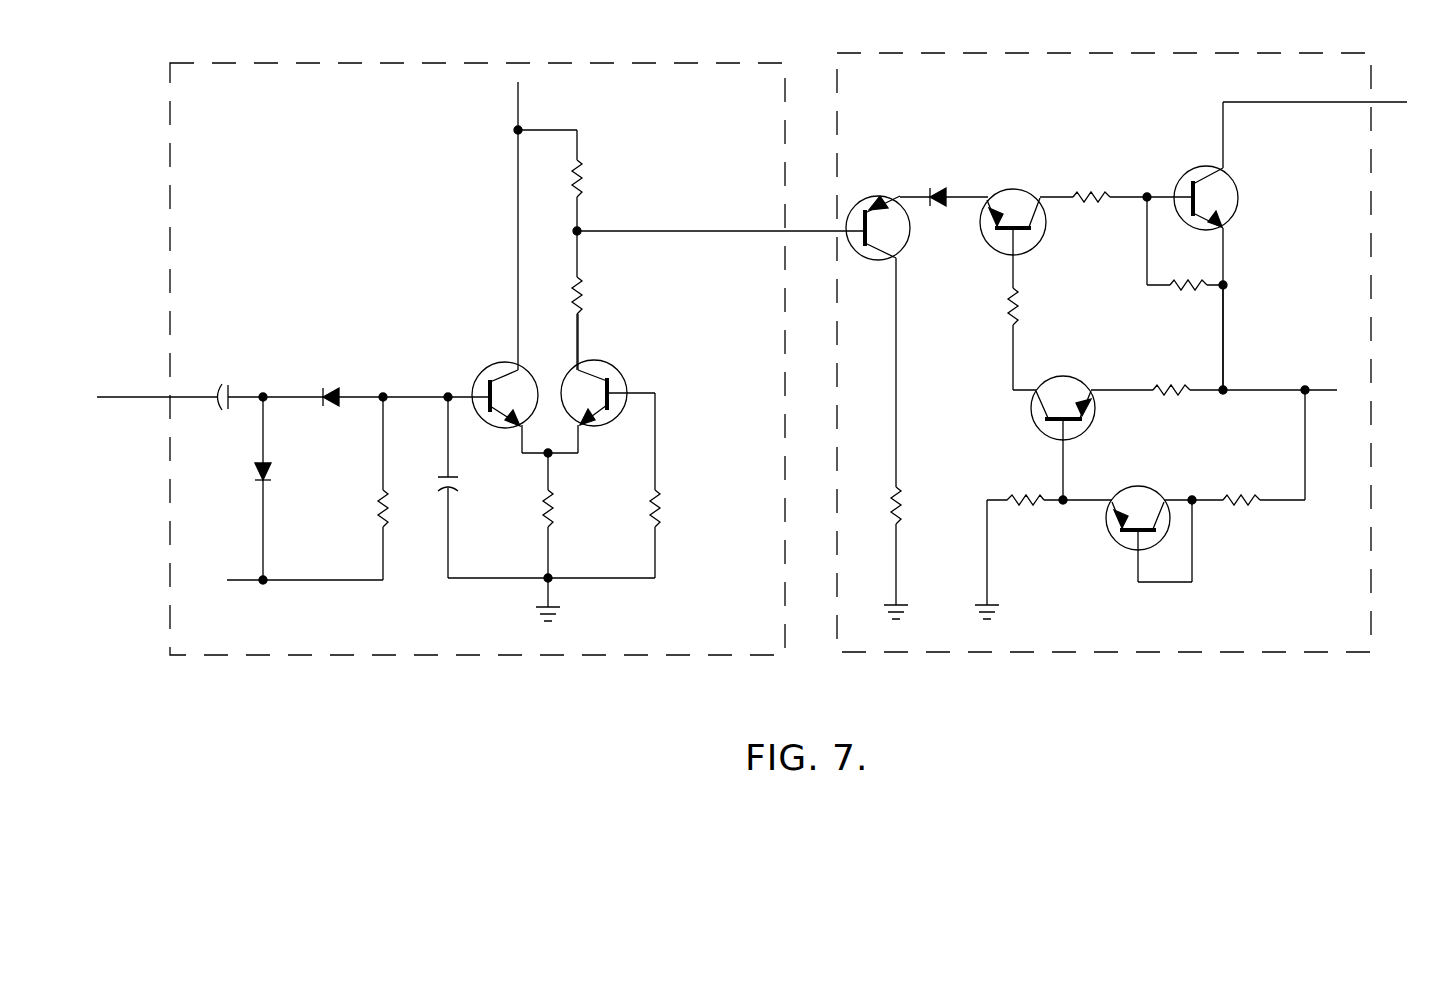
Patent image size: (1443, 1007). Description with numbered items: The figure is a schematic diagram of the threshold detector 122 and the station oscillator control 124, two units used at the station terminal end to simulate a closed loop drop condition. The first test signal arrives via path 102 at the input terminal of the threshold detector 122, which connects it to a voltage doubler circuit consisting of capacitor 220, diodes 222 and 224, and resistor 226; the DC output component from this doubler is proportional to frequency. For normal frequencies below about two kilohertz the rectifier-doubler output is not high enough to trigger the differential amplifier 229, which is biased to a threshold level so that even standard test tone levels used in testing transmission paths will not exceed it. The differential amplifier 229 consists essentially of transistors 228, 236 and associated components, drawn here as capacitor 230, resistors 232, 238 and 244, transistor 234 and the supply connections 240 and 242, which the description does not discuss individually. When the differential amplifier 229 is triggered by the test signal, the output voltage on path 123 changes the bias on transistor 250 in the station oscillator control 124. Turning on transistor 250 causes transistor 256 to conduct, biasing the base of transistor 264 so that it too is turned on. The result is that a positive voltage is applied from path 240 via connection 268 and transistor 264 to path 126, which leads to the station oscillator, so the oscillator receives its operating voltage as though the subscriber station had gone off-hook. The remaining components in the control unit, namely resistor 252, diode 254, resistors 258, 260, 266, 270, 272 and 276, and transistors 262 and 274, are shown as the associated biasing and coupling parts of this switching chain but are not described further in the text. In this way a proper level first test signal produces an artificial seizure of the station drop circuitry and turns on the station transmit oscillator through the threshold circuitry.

The path 102 is at (133, 396).
The threshold detector 122 is at (232, 113).
The path 123 is at (792, 231).
The station oscillator control 124 is at (887, 102).
The path 126 is at (1378, 101).
The capacitor 220 is at (226, 392).
The diode 222 is at (331, 392).
The diode 224 is at (268, 473).
The resistor 226 is at (380, 496).
The transistor 228 is at (497, 366).
The differential amplifier 229 is at (472, 326).
The capacitor 230 is at (458, 482).
The resistor 232 is at (552, 497).
The transistor 234 is at (608, 366).
The transistor 236 is at (581, 297).
The resistor 238 is at (581, 170).
The path 240 is at (519, 110).
The supply voltage terminal 242 is at (232, 582).
The resistor 244 is at (659, 497).
The transistor 250 is at (908, 236).
The resistor 252 is at (902, 500).
The diode 254 is at (938, 194).
The transistor 256 is at (1018, 190).
The resistor 258 is at (1098, 196).
The resistor 260 is at (1020, 300).
The transistor 262 is at (1095, 407).
The transistor 264 is at (1236, 190).
The resistor 266 is at (1185, 257).
The path 268 is at (1226, 322).
The resistor 270 is at (1186, 387).
The resistor 272 is at (1018, 490).
The transistor 274 is at (1139, 496).
The resistor 276 is at (1229, 496).